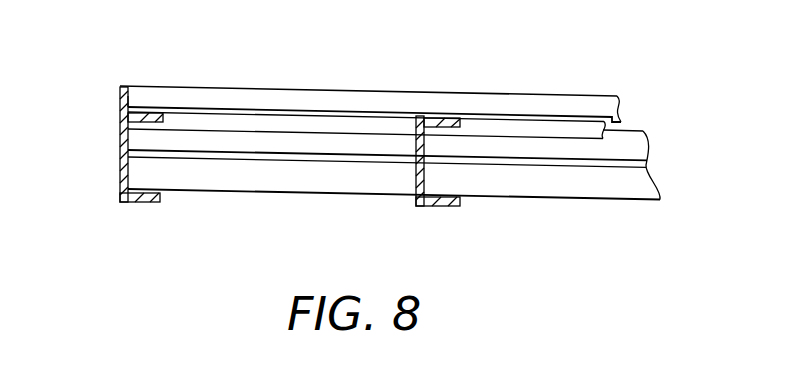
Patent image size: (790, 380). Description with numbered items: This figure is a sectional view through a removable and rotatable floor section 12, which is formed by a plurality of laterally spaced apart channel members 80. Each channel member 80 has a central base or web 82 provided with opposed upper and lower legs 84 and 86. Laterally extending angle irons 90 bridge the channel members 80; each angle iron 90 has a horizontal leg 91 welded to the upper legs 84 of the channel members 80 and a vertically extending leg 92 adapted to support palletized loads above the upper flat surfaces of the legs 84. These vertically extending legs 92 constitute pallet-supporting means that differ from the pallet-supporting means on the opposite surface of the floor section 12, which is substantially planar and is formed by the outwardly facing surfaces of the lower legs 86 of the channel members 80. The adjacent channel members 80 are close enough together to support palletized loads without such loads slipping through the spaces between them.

The floor section 12 is at (637, 129).
The channel member 80 is at (236, 161).
The central base or web 82 is at (122, 163).
The upper leg 84 is at (150, 117).
The lower leg 86 is at (145, 203).
The angle iron 90 is at (614, 89).
The horizontal leg 91 is at (121, 101).
The vertically extending leg 92 is at (373, 102).